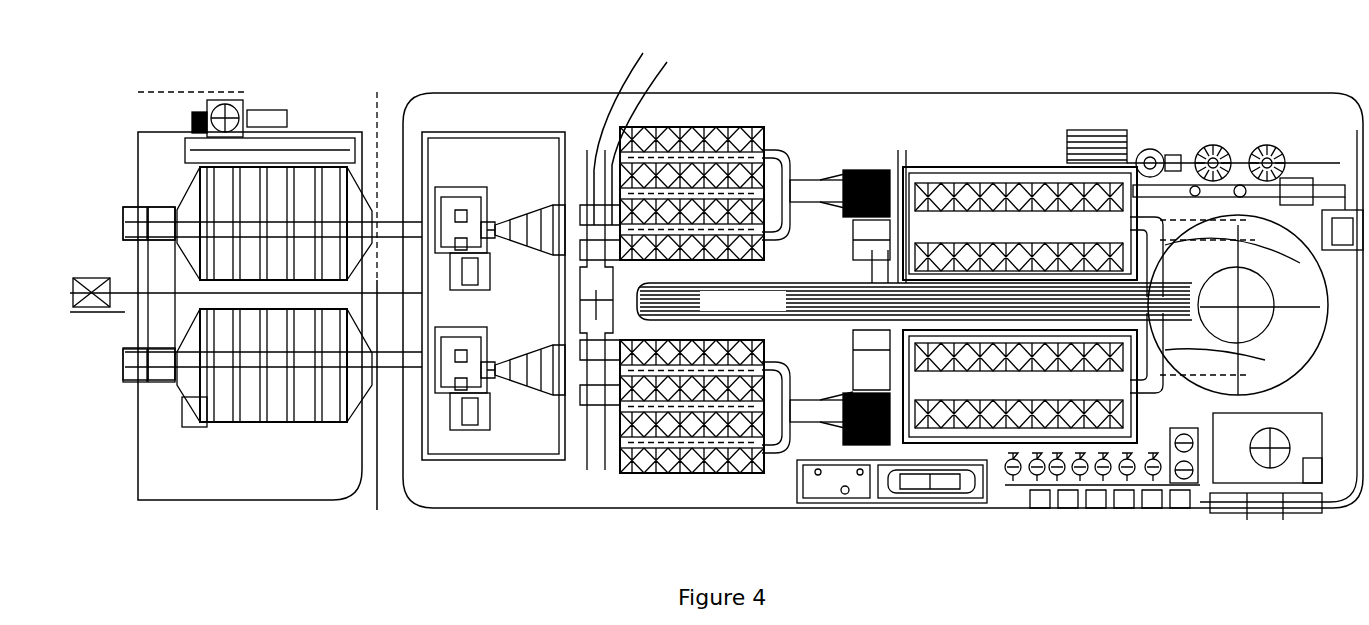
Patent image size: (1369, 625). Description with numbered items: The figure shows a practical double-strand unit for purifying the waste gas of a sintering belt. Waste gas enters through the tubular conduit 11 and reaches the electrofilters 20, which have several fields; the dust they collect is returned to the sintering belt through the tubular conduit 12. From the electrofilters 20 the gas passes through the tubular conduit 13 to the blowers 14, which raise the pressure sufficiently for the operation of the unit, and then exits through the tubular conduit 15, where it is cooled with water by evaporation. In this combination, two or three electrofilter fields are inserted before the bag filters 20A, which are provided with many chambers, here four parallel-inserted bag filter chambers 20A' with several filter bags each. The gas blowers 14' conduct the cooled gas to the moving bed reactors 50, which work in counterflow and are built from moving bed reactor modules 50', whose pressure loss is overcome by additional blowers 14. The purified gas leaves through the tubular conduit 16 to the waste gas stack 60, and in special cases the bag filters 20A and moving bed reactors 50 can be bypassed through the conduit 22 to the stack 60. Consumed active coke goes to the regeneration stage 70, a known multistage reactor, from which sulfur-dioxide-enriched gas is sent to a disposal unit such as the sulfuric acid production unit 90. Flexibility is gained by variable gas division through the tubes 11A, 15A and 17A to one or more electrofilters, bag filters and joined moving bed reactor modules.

The tubular conduit 11 is at (90, 277).
The tube 11A is at (133, 262).
The tubular conduit 12 is at (193, 128).
The tubular conduit 13 is at (387, 255).
The blower 14 is at (500, 292).
The gas blower 14' is at (858, 294).
The tubular conduit 15 is at (580, 527).
The tube 15A is at (642, 126).
The tubular conduit 16 is at (1253, 240).
The tube 17A is at (795, 187).
The electrofilter 20 is at (300, 195).
The bag filter 20A is at (694, 302).
The bag filter chamber 20A' is at (771, 331).
The conduit 22 is at (817, 282).
The moving bed reactor 50 is at (1020, 315).
The moving bed reactor module 50' is at (1017, 271).
The waste gas stack 60 is at (1288, 327).
The regeneration stage 70 is at (1166, 137).
The sulfuric acid production unit 90 is at (1204, 514).